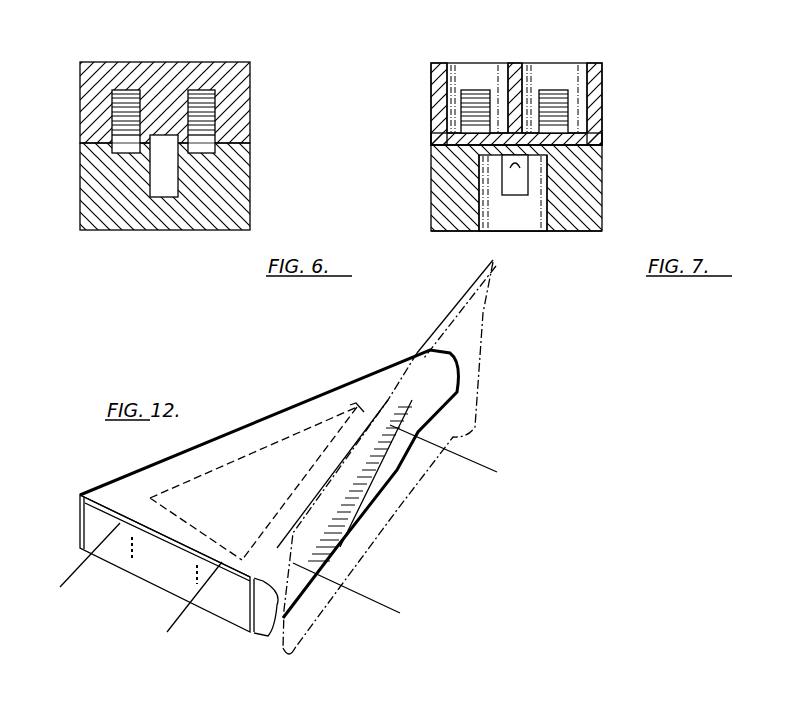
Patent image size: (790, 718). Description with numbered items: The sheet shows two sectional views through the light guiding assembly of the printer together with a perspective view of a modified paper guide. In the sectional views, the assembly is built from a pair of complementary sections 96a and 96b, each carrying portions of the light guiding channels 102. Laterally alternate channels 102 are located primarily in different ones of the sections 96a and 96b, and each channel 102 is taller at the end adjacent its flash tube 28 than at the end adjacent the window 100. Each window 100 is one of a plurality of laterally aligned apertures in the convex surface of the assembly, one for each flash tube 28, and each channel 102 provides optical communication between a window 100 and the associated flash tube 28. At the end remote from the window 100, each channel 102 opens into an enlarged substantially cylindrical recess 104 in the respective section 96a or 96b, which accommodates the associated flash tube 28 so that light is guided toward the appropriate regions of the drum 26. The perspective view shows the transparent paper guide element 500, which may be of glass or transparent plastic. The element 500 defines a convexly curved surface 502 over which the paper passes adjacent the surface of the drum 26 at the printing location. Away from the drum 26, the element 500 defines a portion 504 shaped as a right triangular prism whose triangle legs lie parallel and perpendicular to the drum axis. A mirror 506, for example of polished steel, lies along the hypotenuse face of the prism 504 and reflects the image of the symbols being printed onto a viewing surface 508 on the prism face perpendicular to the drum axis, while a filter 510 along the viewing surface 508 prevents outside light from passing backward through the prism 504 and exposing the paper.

In FIG. 12, the drum 26 is at (480, 331).
In FIG. 7, the flash tube 28 is at (527, 63).
In FIG. 6, the complementary section 96a is at (250, 103).
In FIG. 7, the complementary section 96a is at (602, 111).
In FIG. 6, the complementary section 96b is at (250, 194).
In FIG. 7, the complementary section 96b is at (602, 182).
In FIG. 6, the window 100 is at (150, 161).
In FIG. 6, the light guiding channel 102 is at (193, 88).
In FIG. 7, the light guiding channel 102 is at (470, 90).
In FIG. 7, the cylindrical recess 104 is at (447, 78).
In FIG. 12, the transparent paper guide element 500 is at (362, 372).
In FIG. 12, the convexly curved surface 502 is at (320, 554).
In FIG. 12, the right triangular prism portion 504 is at (273, 433).
In FIG. 12, the mirror 506 is at (127, 475).
In FIG. 12, the viewing surface 508 is at (80, 527).
In FIG. 12, the filter 510 is at (242, 607).